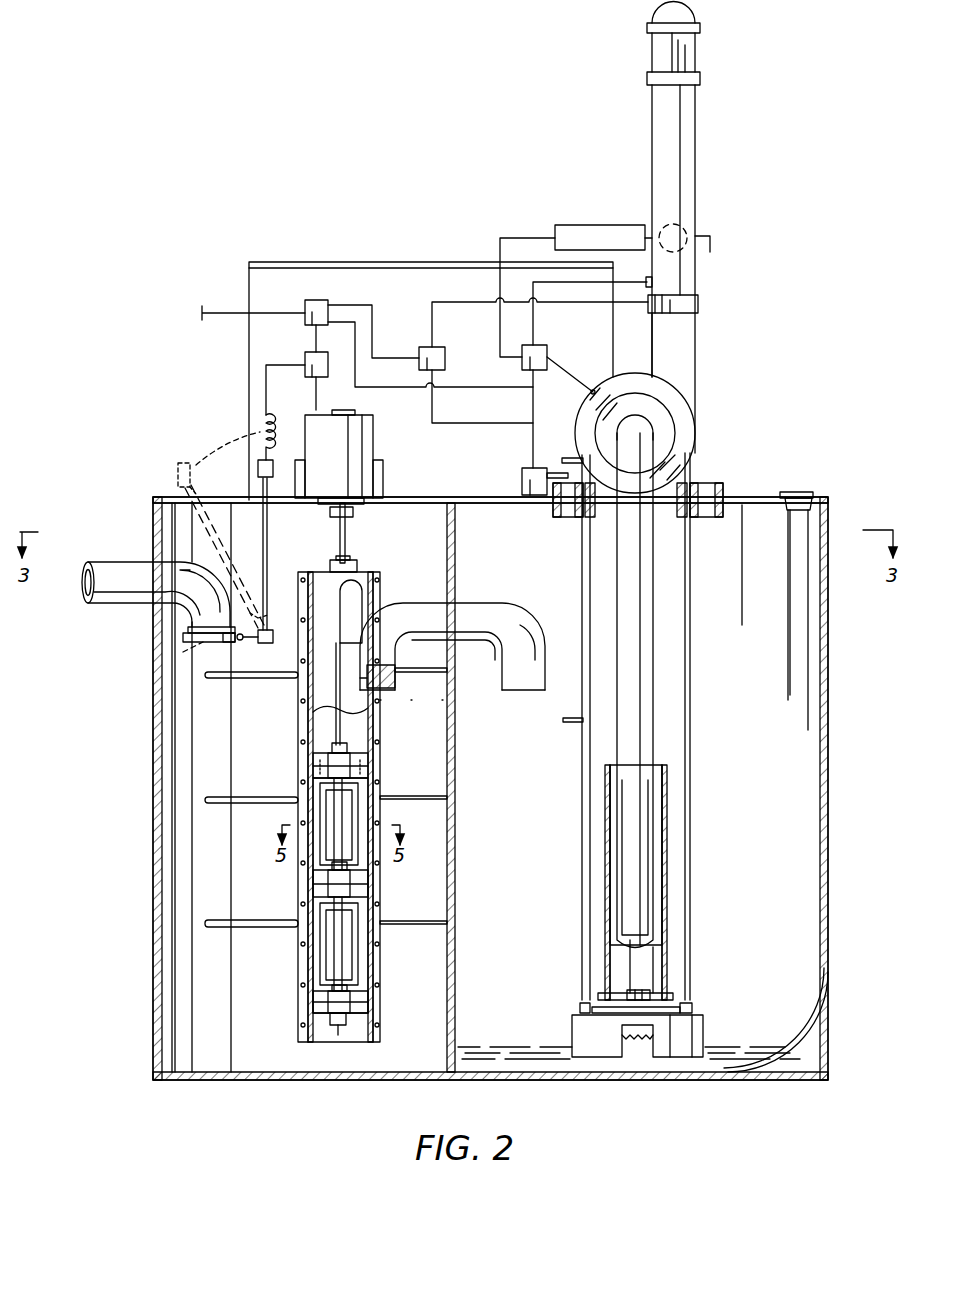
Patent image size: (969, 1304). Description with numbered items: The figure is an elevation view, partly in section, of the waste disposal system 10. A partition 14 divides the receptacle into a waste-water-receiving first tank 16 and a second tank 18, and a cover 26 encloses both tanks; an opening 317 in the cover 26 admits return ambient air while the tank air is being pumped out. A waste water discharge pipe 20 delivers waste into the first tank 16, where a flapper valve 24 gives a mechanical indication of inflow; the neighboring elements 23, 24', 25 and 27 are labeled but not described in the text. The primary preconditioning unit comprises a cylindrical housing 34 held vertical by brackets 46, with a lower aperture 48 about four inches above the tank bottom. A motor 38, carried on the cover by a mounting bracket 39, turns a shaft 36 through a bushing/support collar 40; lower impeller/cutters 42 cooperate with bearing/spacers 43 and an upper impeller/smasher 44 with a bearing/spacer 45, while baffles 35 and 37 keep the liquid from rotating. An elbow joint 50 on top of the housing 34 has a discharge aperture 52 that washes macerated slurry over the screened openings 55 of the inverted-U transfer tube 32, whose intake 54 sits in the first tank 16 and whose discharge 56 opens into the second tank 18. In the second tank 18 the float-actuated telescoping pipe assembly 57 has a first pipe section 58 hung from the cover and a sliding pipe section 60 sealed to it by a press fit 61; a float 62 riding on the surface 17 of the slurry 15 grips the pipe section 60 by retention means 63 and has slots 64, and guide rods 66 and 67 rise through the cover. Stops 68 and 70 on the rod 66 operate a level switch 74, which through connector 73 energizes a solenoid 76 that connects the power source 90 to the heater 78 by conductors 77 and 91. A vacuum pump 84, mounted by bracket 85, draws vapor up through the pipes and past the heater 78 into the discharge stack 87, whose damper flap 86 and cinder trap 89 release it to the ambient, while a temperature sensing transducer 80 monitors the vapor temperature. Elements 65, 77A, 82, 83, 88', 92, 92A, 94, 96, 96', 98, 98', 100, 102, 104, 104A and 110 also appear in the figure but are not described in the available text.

The waste disposal system 10 is at (120, 372).
The partition 14 is at (456, 842).
The slurry 15 is at (725, 1055).
The first tank 16 is at (440, 837).
The surface 17 is at (760, 1040).
The second tank 18 is at (530, 784).
The waste water discharge pipe 20 is at (110, 562).
The pivot pin 23 is at (240, 643).
The flapper valve 24 is at (171, 638).
The nozzle alternate position 24' is at (154, 659).
The link 25 is at (250, 640).
The cover 26 is at (772, 497).
The actuator block 27 is at (270, 645).
The transfer tube 32 is at (487, 603).
The cylindrical housing 34 is at (308, 868).
The baffle 35 is at (326, 795).
The shaft 36 is at (346, 522).
The baffle 37 is at (326, 920).
The motor 38 is at (374, 432).
The mounting bracket 39 is at (378, 480).
The bushing/support collar 40 is at (356, 566).
The lower impeller/cutters 42 is at (355, 868).
The bearing/spacers 43 is at (357, 888).
The upper impeller/smasher 44 is at (347, 750).
The bearing/spacer 45 is at (357, 770).
The brackets 46 is at (205, 676).
The lower aperture 48 is at (323, 1035).
The elbow joint 50 is at (363, 591).
The discharge aperture 52 is at (343, 620).
The intake 54 is at (388, 706).
The openings 55 is at (367, 680).
The discharge 56 is at (510, 691).
The float-actuated telescoping pipe assembly 57 is at (708, 764).
The telescoping first pipe section 58 is at (648, 633).
The telescoping pipe section 60 is at (690, 831).
The press fit location 61 is at (667, 757).
The float assembly 62 is at (582, 1015).
The retention means 63 is at (680, 985).
The slots 64 is at (621, 1044).
The filter cavity 65 is at (650, 856).
The rod 66 is at (582, 555).
The rod 67 is at (691, 550).
The second stop member 68 is at (570, 458).
The first stop member 70 is at (570, 723).
The connector 73 is at (533, 445).
The level switch 74 is at (522, 480).
The first solenoid 76 is at (446, 358).
The conductor 77 is at (390, 356).
The wire 77A is at (452, 390).
The heater 78 is at (698, 303).
The temperature sensing transducer 80 is at (647, 283).
The control unit 82 is at (548, 352).
The pipe bend 83 is at (650, 425).
The vacuum pump 84 is at (696, 430).
The bracket 85 is at (692, 486).
The damper flap 86 is at (688, 228).
The discharge stack 87 is at (696, 163).
The wire 88' is at (540, 313).
The cinder trap and/or spark arrestor 89 is at (700, 48).
The source of electrical power 90 is at (218, 310).
The conductor 91 is at (556, 303).
The wire 92 is at (580, 382).
The wire 92A is at (502, 236).
The electro-mechanical link 94 is at (590, 225).
The actuator rod 96 is at (285, 554).
The actuator rod alternate position 96' is at (226, 556).
The solenoid 98 is at (240, 476).
The solenoid alternate position 98' is at (157, 478).
The spring 100 is at (262, 450).
The relay 102 is at (313, 371).
The wire 104 is at (315, 337).
The wire 104A is at (318, 402).
The control box 110 is at (322, 301).
The opening 317 is at (798, 492).